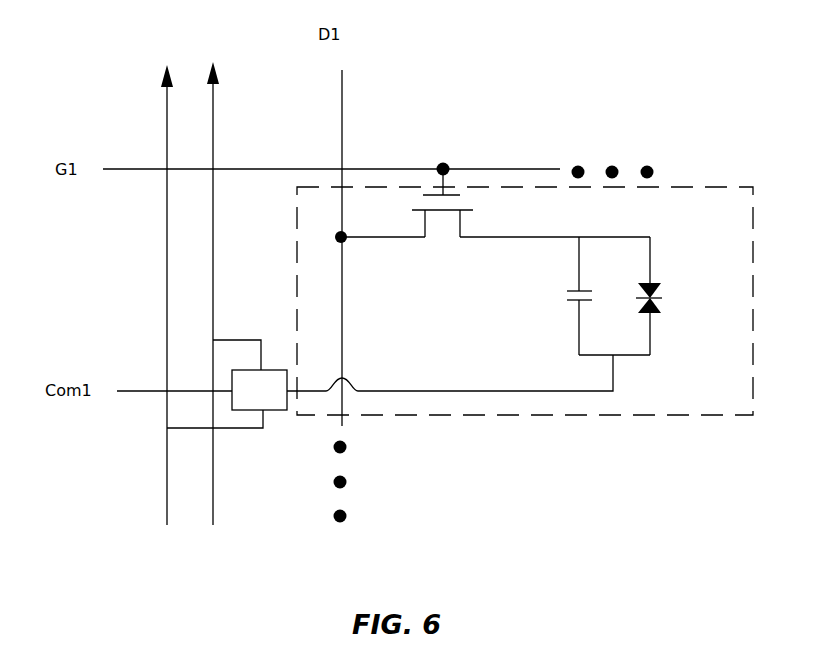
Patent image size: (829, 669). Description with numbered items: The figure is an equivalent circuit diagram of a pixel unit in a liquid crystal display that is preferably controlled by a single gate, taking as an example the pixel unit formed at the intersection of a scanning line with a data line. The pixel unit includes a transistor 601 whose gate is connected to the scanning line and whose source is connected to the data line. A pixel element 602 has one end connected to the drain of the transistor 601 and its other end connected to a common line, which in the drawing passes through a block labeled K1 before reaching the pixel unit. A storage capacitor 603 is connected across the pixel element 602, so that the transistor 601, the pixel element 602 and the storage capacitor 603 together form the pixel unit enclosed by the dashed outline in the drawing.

The transistor 601 is at (452, 213).
The pixel element 602 is at (660, 299).
The storage capacitor 603 is at (570, 302).
The switch K1 is at (259, 390).